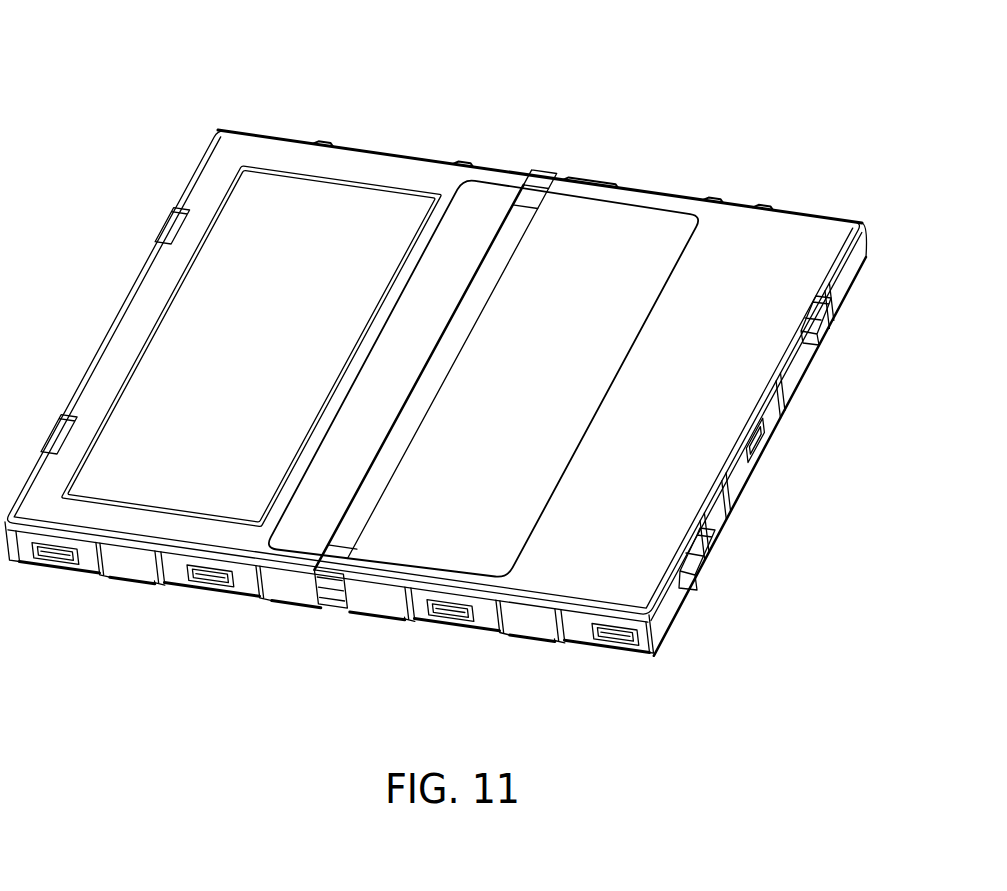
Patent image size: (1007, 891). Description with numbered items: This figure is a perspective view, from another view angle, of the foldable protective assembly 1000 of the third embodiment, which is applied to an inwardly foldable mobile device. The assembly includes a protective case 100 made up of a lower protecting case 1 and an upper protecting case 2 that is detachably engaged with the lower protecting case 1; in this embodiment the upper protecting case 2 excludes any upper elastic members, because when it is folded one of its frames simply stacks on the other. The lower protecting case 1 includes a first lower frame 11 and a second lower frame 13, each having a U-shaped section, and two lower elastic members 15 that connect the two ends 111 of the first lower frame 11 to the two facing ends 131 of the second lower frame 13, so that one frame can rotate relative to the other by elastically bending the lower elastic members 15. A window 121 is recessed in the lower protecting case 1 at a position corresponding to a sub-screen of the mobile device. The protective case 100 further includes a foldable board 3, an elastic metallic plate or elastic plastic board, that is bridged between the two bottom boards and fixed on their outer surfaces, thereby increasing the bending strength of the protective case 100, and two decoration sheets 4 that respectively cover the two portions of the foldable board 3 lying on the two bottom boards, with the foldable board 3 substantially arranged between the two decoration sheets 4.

The foldable protective assembly 1000 is at (100, 65).
The protective case 100 is at (893, 146).
The lower protecting case 1 is at (819, 221).
The upper protecting case 2 is at (850, 315).
The foldable board 3 is at (456, 303).
The decoration sheets 4 is at (561, 193).
The first lower frame 11 is at (125, 565).
The ends of the first lower frame 111 is at (286, 592).
The window 121 is at (170, 299).
The second lower frame 13 is at (526, 625).
The ends of the second lower frame 131 is at (372, 605).
The lower elastic members 15 is at (318, 606).